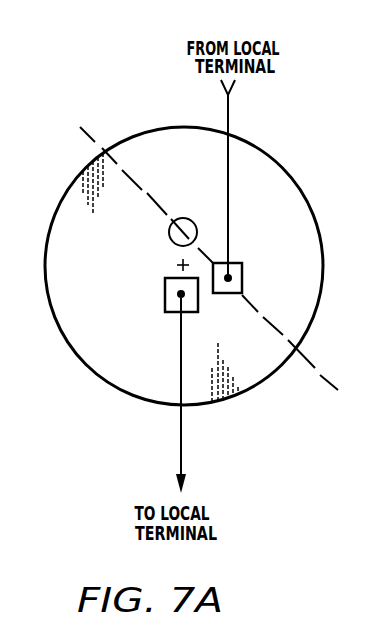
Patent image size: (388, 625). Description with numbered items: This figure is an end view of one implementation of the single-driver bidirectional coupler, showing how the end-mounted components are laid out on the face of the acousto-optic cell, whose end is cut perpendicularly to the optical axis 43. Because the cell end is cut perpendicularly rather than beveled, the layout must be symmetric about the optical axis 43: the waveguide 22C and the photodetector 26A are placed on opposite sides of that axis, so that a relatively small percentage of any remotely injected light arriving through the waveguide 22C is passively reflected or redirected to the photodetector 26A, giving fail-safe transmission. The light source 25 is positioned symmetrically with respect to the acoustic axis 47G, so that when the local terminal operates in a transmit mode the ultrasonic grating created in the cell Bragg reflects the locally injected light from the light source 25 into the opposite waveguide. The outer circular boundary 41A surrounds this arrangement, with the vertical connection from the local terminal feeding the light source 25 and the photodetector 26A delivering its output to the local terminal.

The circular display area 41A is at (287, 192).
The waveguide 22C is at (180, 218).
The light source 25 is at (242, 272).
The photodetector 26A is at (165, 305).
The optical axis 43 is at (176, 265).
The acoustic axis 47G is at (326, 378).